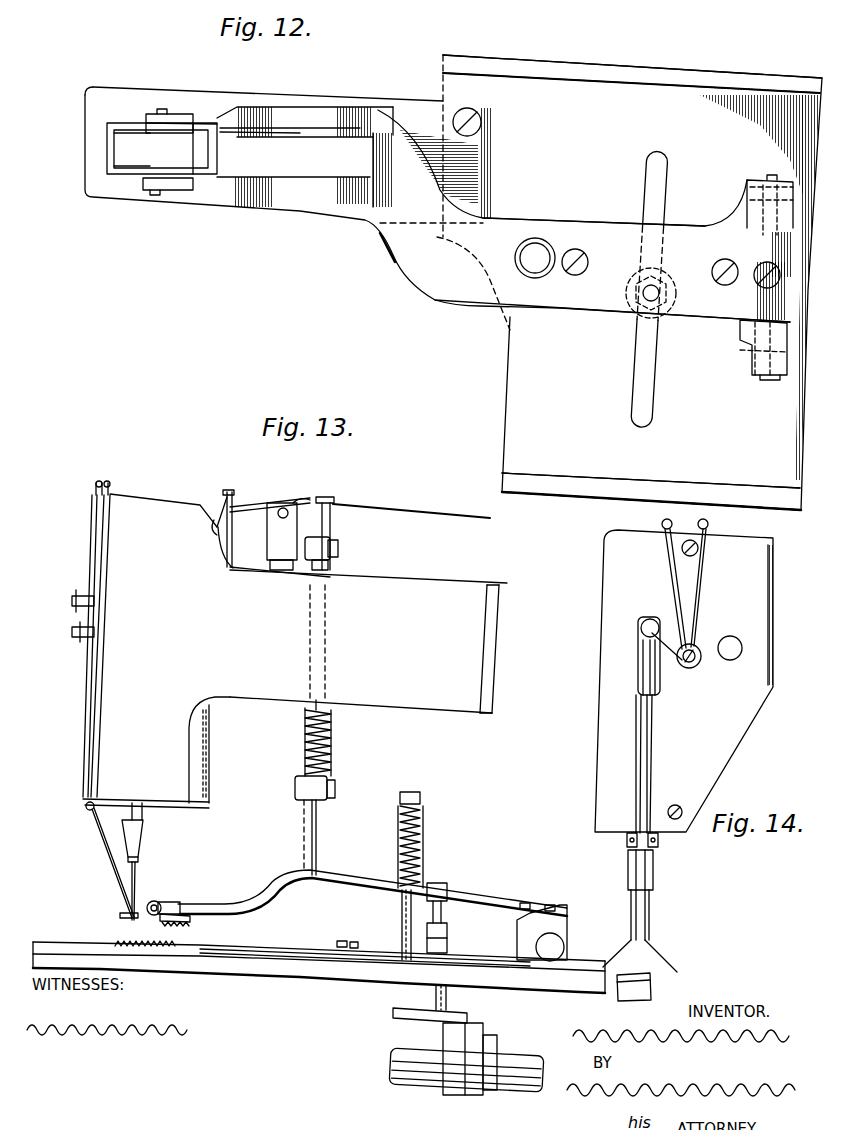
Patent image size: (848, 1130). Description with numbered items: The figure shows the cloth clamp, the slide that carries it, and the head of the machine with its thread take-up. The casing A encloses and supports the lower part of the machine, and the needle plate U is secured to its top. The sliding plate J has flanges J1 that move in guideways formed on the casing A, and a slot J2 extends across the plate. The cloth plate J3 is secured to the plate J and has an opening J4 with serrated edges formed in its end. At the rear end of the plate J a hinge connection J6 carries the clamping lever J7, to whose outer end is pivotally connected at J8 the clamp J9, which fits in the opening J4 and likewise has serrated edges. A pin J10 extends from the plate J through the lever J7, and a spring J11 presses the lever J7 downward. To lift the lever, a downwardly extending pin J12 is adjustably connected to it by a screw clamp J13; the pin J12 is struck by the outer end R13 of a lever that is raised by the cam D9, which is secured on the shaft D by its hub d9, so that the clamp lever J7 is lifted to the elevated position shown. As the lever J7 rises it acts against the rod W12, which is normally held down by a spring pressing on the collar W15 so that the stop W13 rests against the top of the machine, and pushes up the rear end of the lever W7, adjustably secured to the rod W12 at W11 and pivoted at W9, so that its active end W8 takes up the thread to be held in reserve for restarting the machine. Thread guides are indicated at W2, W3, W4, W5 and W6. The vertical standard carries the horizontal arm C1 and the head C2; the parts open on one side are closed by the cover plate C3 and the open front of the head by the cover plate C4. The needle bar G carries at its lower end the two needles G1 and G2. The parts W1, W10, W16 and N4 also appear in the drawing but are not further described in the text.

In FIG. 12, the sliding plate J is at (601, 282).
In FIG. 13, the sliding plate J is at (375, 953).
In FIG. 12, the flanges J1 is at (657, 77).
In FIG. 12, the slot J2 is at (655, 396).
In FIG. 12, the cloth plate J3 is at (145, 200).
In FIG. 13, the cloth plate J3 is at (260, 953).
In FIG. 12, the opening J4 is at (107, 163).
In FIG. 13, the opening J4 is at (117, 943).
In FIG. 12, the hinge connection J6 is at (775, 348).
In FIG. 13, the hinge connection J6 is at (566, 947).
In FIG. 12, the clamping lever J7 is at (612, 270).
In FIG. 13, the clamping lever J7 is at (345, 880).
In FIG. 12, the pivotal connection J8 is at (157, 112).
In FIG. 13, the pivotal connection J8 is at (158, 904).
In FIG. 12, the clamp J9 is at (118, 130).
In FIG. 13, the clamp J9 is at (190, 921).
In FIG. 12, the pin J10 is at (540, 250).
In FIG. 13, the pin J10 is at (401, 915).
In FIG. 13, the spring J11 is at (421, 831).
In FIG. 13, the clamp lifting pin J12 is at (430, 998).
In FIG. 12, the screw clamp J13 is at (573, 275).
In FIG. 13, the screw clamp J13 is at (448, 903).
In FIG. 13, the bracket W1 is at (236, 551).
In FIG. 13, the thread guide W2 is at (228, 491).
In FIG. 13, the thread guide W3 is at (158, 494).
In FIG. 14, the thread guide W4 is at (685, 607).
In FIG. 13, the thread guide W5 is at (72, 598).
In FIG. 14, the thread guide W5 is at (640, 626).
In FIG. 13, the thread guide W6 is at (86, 806).
In FIG. 14, the thread guide W6 is at (627, 838).
In FIG. 13, the lever W7 is at (245, 504).
In FIG. 13, the active end W8 is at (217, 530).
In FIG. 13, the pivot W9 is at (298, 504).
In FIG. 13, the cap W10 is at (334, 500).
In FIG. 13, the adjustable connection W11 is at (331, 520).
In FIG. 13, the rod W12 is at (330, 568).
In FIG. 13, the stop W13 is at (338, 548).
In FIG. 13, the collar W15 is at (330, 786).
In FIG. 13, the spring W16 is at (327, 743).
In FIG. 13, the horizontal arm C1 is at (500, 590).
In FIG. 13, the head C2 is at (204, 762).
In FIG. 13, the cover plate C3 is at (368, 641).
In FIG. 13, the cover plate C4 is at (93, 668).
In FIG. 14, the cover plate C4 is at (684, 681).
In FIG. 13, the clamp N4 is at (75, 633).
In FIG. 13, the needle bar G is at (143, 813).
In FIG. 14, the needle bar G is at (627, 857).
In FIG. 13, the needle G1 is at (135, 884).
In FIG. 14, the needle G1 is at (631, 913).
In FIG. 14, the needle G2 is at (649, 913).
In FIG. 13, the casing A is at (52, 950).
In FIG. 14, the casing A is at (651, 988).
In FIG. 13, the needle plate U is at (230, 951).
In FIG. 13, the shaft D is at (522, 1066).
In FIG. 13, the cam D9 is at (484, 1046).
In FIG. 13, the hub d9 is at (458, 1044).
In FIG. 13, the outer end of lever R13 is at (396, 1014).